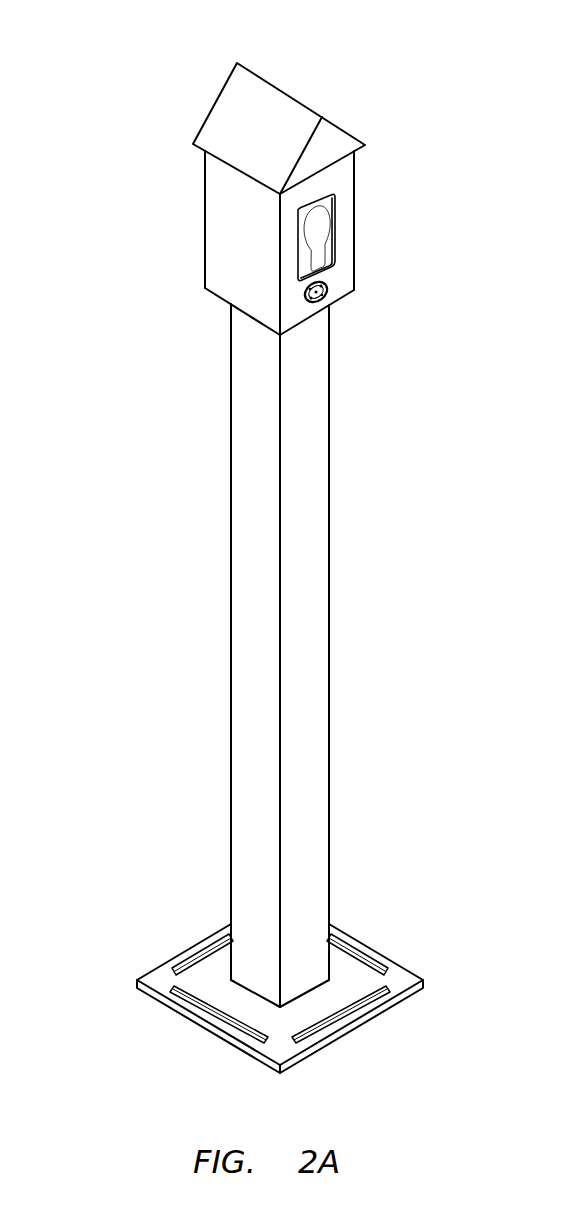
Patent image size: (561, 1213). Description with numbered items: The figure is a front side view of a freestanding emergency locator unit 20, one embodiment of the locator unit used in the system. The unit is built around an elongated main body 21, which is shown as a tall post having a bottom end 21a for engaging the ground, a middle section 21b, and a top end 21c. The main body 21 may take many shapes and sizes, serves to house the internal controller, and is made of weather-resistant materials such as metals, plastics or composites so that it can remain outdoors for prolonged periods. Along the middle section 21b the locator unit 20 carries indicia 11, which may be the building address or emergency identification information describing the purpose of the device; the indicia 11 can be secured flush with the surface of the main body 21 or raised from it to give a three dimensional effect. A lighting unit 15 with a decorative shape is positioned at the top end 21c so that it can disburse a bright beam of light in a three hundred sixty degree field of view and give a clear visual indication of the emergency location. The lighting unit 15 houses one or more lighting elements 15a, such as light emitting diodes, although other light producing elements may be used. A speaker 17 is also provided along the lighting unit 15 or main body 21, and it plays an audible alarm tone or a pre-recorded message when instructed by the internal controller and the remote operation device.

The freestanding emergency locator unit 20 is at (267, 544).
The lighting unit 15 is at (368, 248).
The lighting element 15a is at (327, 223).
The speaker 17 is at (305, 306).
The elongated main body 21 is at (352, 462).
The bottom end 21a is at (217, 973).
The middle section 21b is at (320, 614).
The top end 21c is at (316, 322).
The indicia 11 is at (303, 472).